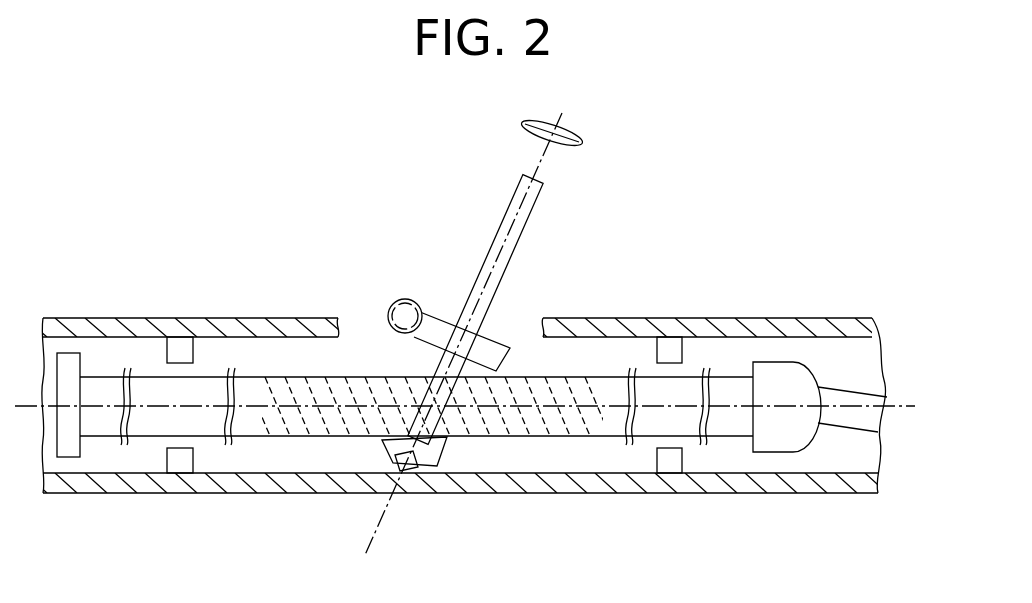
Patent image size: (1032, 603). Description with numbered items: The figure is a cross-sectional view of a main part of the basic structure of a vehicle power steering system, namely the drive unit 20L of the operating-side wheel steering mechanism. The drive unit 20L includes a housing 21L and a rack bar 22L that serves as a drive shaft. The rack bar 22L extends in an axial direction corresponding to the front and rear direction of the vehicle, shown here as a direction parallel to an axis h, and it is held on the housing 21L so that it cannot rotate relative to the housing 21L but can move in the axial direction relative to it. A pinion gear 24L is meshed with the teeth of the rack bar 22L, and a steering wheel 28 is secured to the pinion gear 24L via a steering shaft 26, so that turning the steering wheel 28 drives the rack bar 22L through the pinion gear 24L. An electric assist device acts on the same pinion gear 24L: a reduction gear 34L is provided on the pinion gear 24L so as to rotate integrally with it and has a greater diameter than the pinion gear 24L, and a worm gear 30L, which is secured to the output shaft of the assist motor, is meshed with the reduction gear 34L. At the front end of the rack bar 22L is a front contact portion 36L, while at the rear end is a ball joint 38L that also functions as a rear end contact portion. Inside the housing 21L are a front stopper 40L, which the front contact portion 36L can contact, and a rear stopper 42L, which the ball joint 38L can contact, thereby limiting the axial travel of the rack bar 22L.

The drive unit 20L is at (657, 250).
The housing 21L is at (123, 318).
The rack bar 22L is at (732, 437).
The pinion gear 24L is at (433, 453).
The steering shaft 26 is at (521, 212).
The steering wheel 28 is at (522, 128).
The worm gear 30L is at (391, 310).
The reduction gear 34L is at (438, 318).
The front contact portion 36L is at (67, 365).
The ball joint 38L is at (794, 380).
The front stopper 40L is at (177, 462).
The rear stopper 42L is at (670, 465).